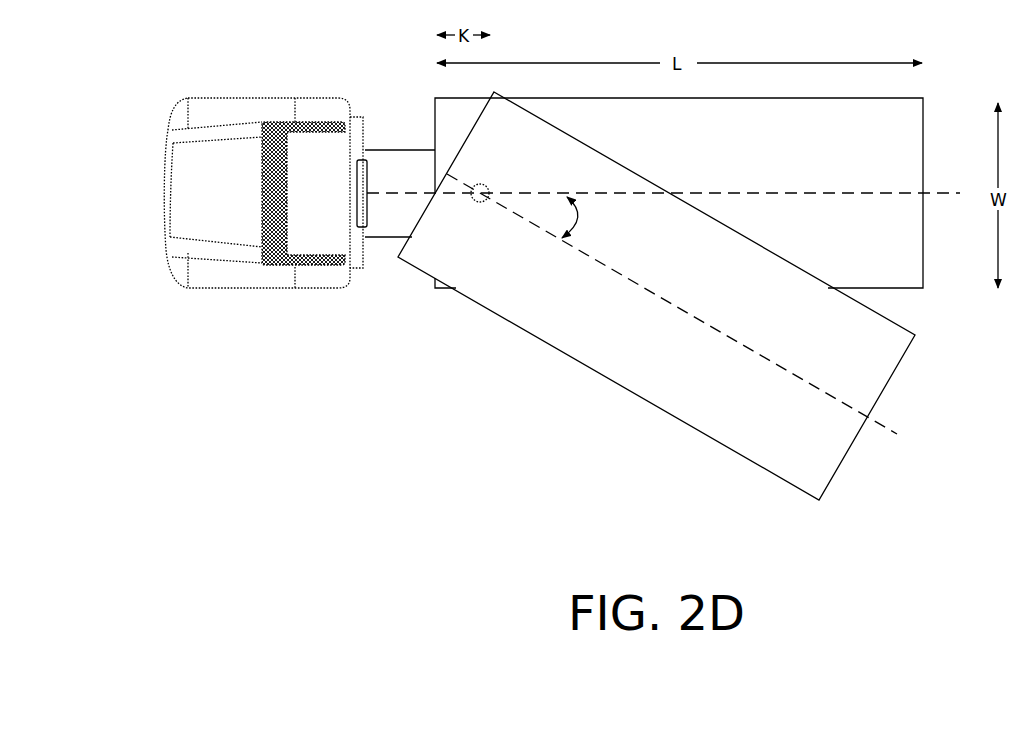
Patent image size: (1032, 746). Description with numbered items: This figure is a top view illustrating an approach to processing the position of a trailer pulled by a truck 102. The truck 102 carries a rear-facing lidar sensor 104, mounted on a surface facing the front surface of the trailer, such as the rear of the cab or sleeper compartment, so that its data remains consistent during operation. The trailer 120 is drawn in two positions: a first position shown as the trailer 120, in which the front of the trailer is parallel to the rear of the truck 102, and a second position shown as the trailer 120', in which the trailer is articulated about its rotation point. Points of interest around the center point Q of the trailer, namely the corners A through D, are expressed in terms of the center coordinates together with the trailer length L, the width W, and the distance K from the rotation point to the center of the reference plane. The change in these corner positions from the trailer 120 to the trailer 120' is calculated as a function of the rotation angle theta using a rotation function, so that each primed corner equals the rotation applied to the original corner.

The truck 102 is at (250, 107).
The lidar sensor 104 is at (365, 150).
The trailer 120 is at (663, 193).
The trailer in second position 120' is at (656, 296).